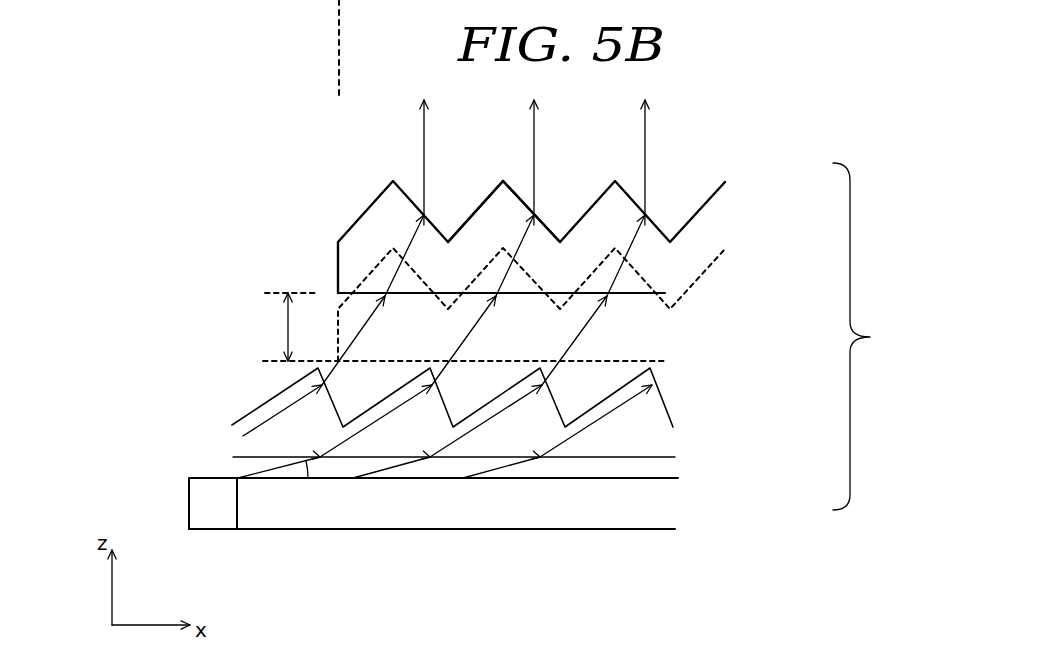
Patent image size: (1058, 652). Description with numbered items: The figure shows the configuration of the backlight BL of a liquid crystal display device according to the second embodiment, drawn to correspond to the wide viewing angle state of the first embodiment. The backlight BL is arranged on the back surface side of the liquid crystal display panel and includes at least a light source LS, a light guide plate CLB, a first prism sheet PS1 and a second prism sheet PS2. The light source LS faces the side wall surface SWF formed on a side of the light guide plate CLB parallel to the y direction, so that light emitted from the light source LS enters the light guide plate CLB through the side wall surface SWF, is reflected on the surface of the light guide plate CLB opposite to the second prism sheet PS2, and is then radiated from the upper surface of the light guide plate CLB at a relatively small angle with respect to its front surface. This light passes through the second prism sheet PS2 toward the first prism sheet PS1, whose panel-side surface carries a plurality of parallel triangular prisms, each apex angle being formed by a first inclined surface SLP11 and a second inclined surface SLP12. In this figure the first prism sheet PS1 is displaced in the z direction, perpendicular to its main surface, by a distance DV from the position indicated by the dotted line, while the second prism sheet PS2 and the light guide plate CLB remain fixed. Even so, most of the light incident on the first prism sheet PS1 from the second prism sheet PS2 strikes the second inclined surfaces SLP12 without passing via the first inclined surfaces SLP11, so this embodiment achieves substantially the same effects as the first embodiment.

The first inclined surface SLP11 is at (478, 205).
The second inclined surface SLP12 is at (568, 181).
The first prism sheet PS1 is at (580, 204).
The second prism sheet PS2 is at (647, 417).
The backlight BL is at (871, 336).
The distance DV is at (487, 304).
The light source LS is at (202, 503).
The side wall surface SWF is at (240, 512).
The light guide plate CLB is at (537, 510).